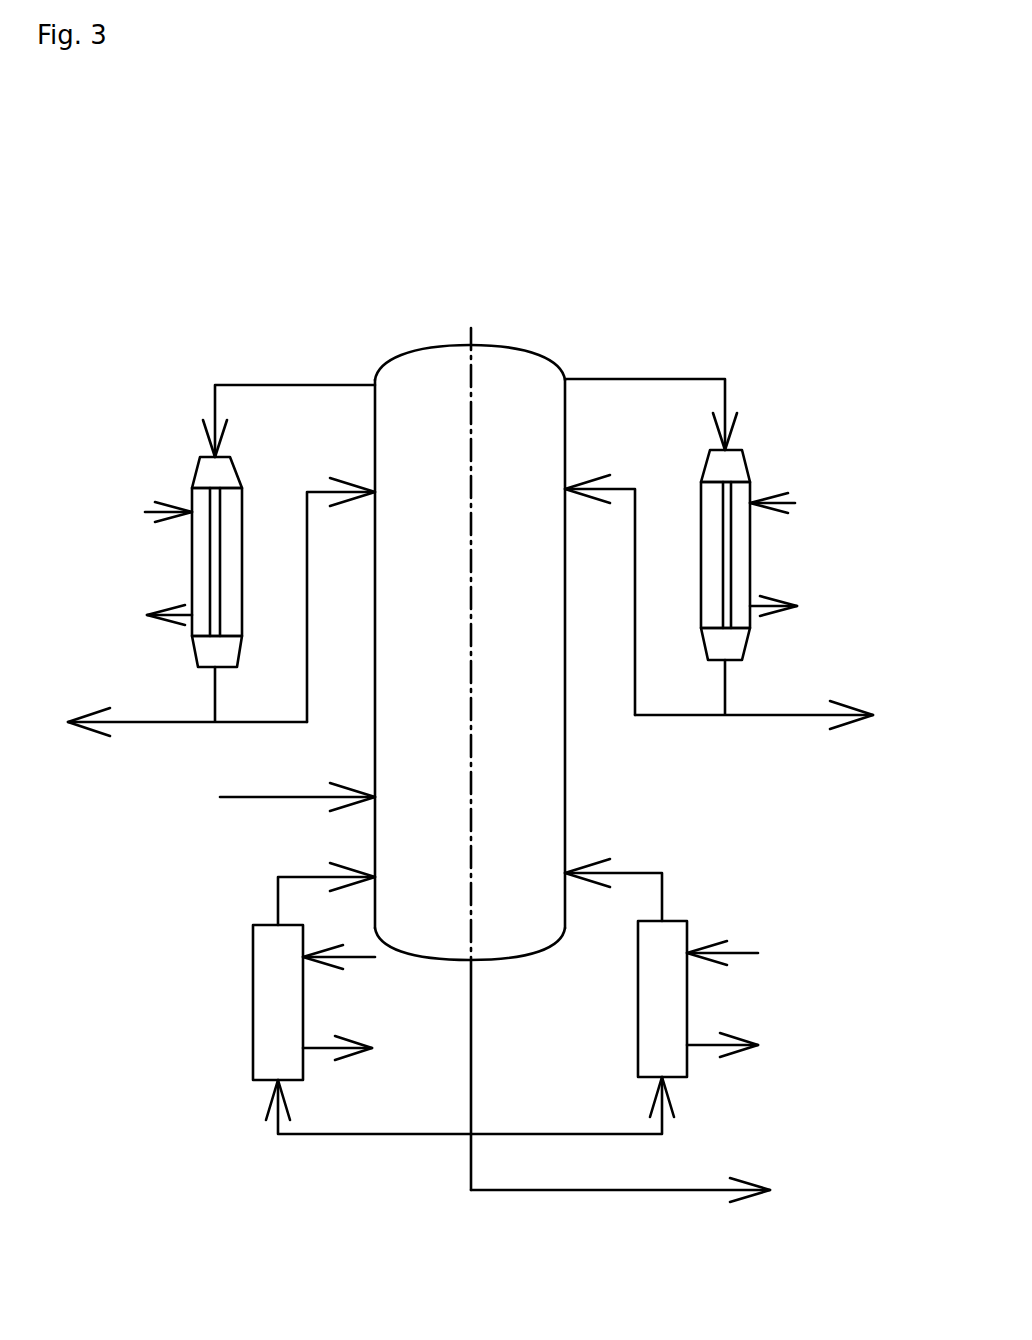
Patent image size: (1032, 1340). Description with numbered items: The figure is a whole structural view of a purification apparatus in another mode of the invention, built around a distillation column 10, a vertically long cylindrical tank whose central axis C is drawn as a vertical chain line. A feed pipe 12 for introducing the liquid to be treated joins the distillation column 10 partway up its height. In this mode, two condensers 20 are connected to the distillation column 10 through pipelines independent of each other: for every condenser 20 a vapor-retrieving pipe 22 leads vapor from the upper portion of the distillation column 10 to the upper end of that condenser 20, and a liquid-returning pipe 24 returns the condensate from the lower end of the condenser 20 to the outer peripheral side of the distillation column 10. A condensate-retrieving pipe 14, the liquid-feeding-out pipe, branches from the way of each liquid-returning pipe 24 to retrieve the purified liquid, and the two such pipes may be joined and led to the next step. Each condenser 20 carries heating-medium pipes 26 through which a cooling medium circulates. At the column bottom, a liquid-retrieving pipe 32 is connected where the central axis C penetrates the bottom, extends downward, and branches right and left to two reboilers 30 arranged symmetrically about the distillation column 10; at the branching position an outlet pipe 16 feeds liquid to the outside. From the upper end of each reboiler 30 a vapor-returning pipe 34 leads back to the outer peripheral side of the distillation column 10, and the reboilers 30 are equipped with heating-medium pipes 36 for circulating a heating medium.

The distillation column 10 is at (552, 647).
The feed pipe 12 is at (303, 797).
The condensate-retrieving pipe 14 is at (157, 720).
The outlet pipe 16 is at (693, 1188).
The condenser 20 is at (200, 566).
The vapor-retrieving pipe 22 is at (275, 385).
The liquid-returning pipe 24 is at (305, 520).
The heating-medium pipe 26 is at (180, 512).
The reboiler 30 is at (252, 1018).
The liquid-retrieving pipe 32 is at (471, 997).
The vapor-returning pipe 34 is at (325, 876).
The heating-medium pipe 36 is at (323, 1047).
The central axis C is at (470, 366).